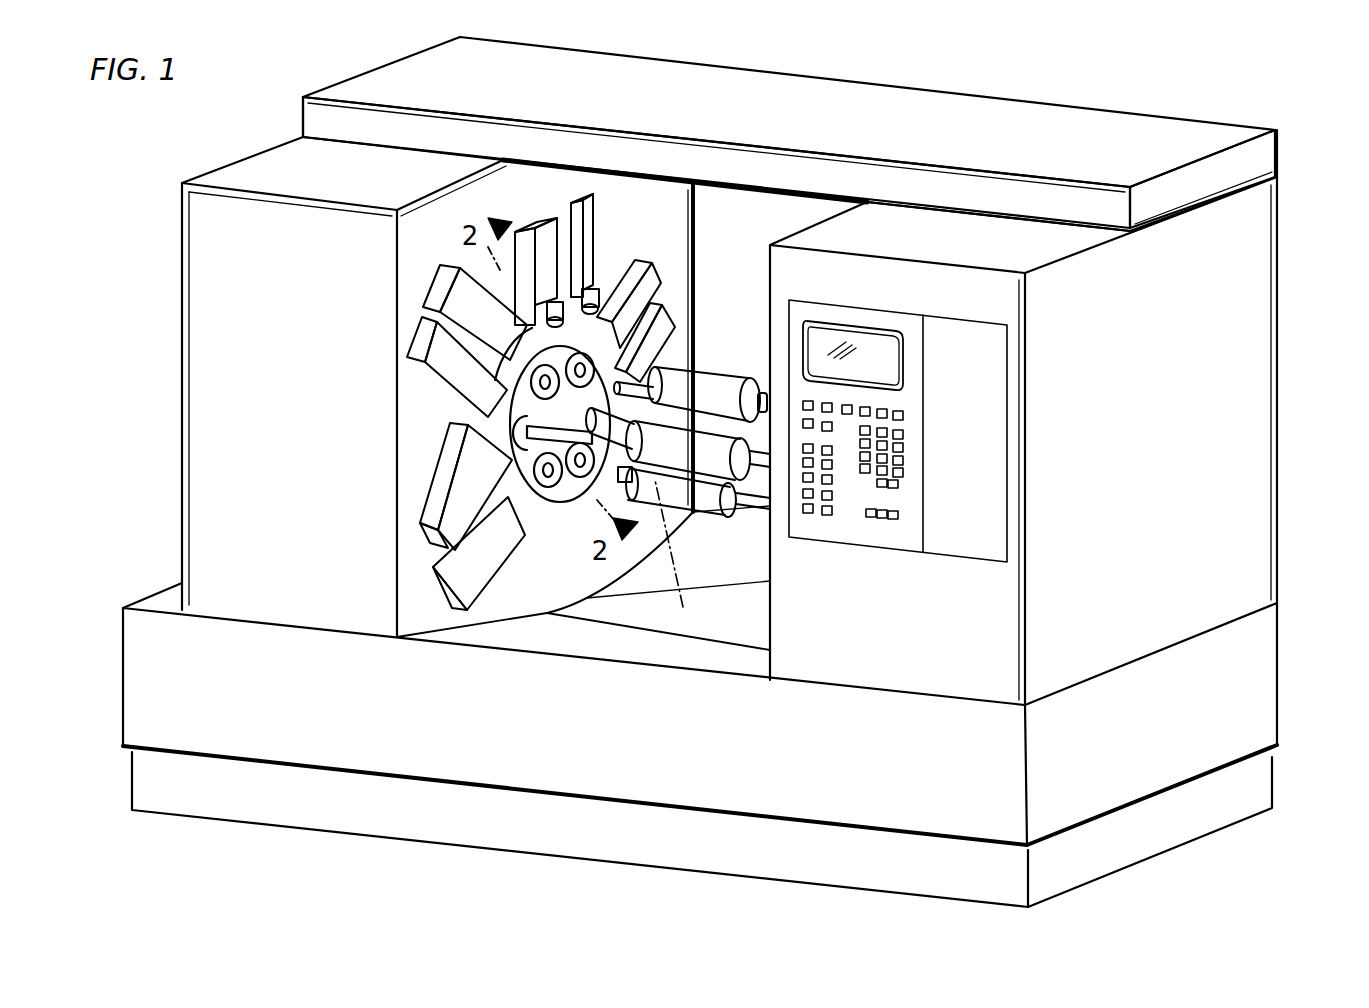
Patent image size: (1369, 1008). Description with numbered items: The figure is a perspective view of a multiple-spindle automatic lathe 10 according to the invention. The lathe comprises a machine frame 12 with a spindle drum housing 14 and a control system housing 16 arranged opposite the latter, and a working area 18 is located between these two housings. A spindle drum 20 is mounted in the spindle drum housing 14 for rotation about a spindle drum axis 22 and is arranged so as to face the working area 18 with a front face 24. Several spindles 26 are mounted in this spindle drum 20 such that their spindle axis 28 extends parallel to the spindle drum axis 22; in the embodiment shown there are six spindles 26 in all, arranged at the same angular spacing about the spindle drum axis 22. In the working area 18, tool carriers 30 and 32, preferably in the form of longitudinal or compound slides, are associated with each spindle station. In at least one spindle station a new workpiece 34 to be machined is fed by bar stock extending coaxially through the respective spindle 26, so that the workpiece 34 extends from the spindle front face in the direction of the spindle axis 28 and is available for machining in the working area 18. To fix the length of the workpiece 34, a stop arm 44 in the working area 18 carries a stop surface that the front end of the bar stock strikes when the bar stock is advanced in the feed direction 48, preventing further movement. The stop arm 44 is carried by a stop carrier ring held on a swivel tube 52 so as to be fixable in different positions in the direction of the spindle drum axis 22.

The multiple-spindle automatic lathe 10 is at (810, 132).
The machine frame 12 is at (172, 628).
The spindle drum housing 14 is at (195, 468).
The control system housing 16 is at (1278, 372).
The working area 18 is at (764, 200).
The spindle drum 20 is at (585, 235).
The spindle drum axis 22 is at (683, 607).
The front face 24 is at (632, 262).
The spindles 26 is at (532, 328).
The spindle axis 28 is at (470, 363).
The tool carrier 30 is at (547, 253).
The tool carrier 32 is at (718, 372).
The workpiece 34 is at (438, 482).
The stop arm 44 is at (515, 433).
The feed direction 48 is at (566, 529).
The swivel tube 52 is at (655, 300).